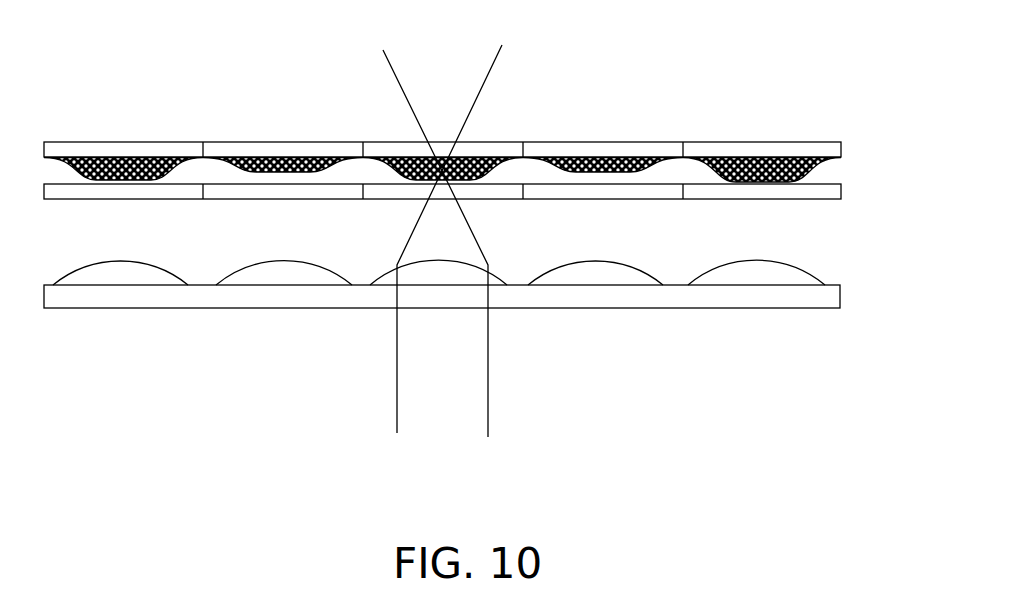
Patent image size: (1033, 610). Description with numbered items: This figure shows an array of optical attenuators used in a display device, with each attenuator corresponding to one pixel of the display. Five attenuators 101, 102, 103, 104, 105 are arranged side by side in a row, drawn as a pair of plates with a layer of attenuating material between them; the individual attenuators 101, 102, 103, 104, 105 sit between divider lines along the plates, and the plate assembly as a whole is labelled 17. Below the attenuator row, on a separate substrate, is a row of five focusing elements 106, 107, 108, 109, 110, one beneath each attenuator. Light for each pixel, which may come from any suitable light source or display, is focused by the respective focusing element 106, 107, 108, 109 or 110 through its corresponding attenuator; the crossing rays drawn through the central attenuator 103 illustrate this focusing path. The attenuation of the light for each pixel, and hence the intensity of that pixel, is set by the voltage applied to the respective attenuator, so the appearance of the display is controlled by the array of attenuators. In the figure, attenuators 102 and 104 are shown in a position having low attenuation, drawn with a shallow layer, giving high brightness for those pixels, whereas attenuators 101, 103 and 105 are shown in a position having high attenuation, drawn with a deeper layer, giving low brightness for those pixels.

The liquid crystal lens array 17 is at (792, 145).
The attenuator 101 is at (113, 142).
The attenuator 102 is at (254, 140).
The attenuator 103 is at (508, 132).
The attenuator 104 is at (608, 165).
The attenuator 105 is at (795, 135).
The focusing element 106 is at (147, 308).
The focusing element 107 is at (308, 308).
The focusing element 108 is at (435, 308).
The focusing element 109 is at (625, 303).
The focusing element 110 is at (743, 285).